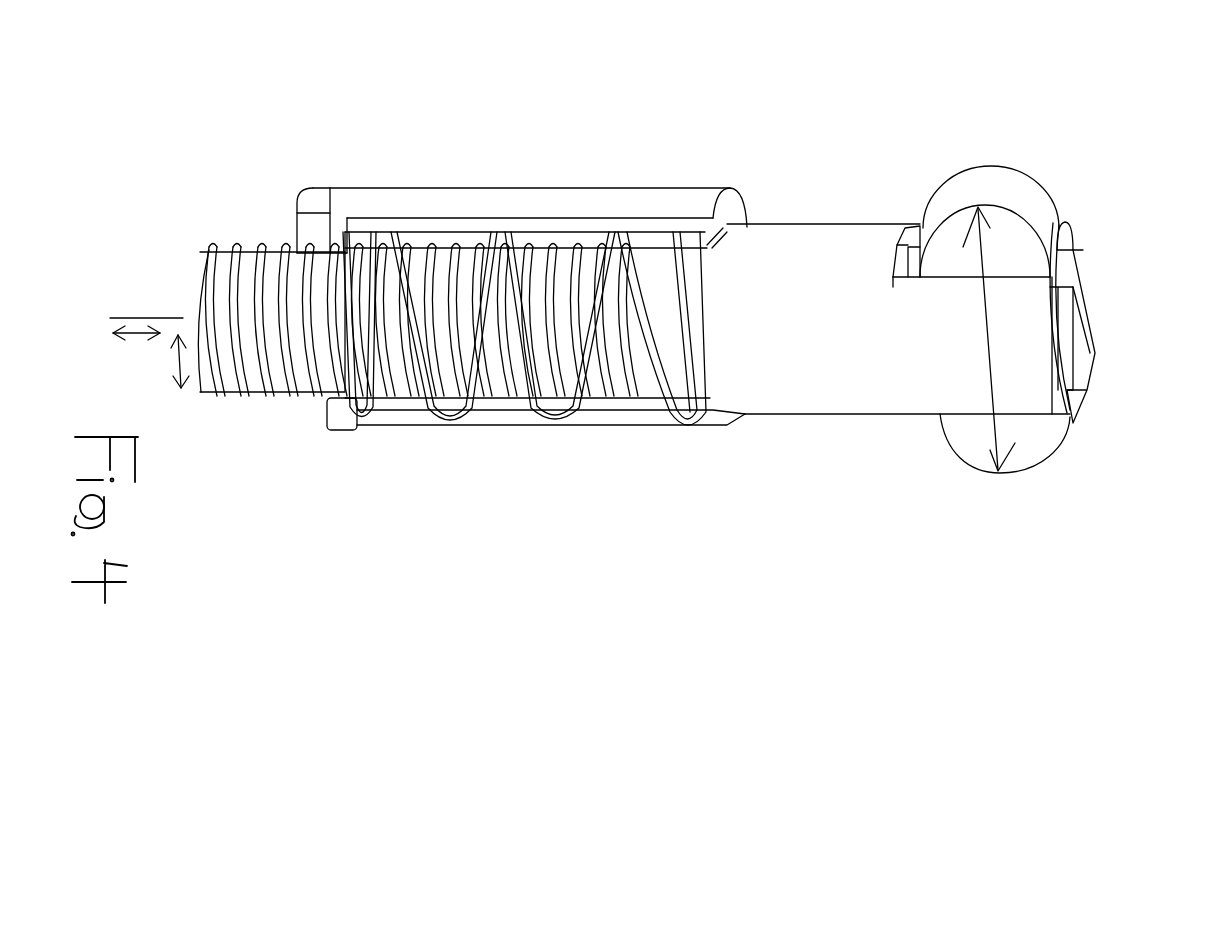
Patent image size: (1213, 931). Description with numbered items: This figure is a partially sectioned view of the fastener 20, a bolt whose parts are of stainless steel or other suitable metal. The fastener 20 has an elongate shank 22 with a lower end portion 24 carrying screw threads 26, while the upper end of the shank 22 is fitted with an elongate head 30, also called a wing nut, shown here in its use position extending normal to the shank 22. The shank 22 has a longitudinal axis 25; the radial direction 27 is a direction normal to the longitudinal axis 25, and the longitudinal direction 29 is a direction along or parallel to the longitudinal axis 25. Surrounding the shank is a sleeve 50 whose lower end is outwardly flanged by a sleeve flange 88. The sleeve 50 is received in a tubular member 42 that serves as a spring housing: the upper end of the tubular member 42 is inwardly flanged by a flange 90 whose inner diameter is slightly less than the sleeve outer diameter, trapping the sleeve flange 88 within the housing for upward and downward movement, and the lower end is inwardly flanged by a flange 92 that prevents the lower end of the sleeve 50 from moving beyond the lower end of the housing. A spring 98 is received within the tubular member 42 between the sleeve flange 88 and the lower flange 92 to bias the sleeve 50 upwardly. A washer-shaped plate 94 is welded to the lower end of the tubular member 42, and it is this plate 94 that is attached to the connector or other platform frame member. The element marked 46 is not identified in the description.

The fastener 20 is at (1115, 498).
The shank 22 is at (197, 287).
The lower end portion 24 is at (287, 397).
The longitudinal axis 25 is at (147, 318).
The screw threads 26 is at (497, 398).
The radial direction 27 is at (168, 367).
The longitudinal direction 29 is at (135, 333).
The head 30 is at (1020, 470).
The tubular member 42 is at (617, 197).
The retaining block 46 is at (340, 430).
The sleeve 50 is at (905, 415).
The sleeve flange 88 is at (555, 400).
The upper flange 90 is at (727, 242).
The lower spring housing flange 92 is at (297, 232).
The washer-shaped plate 94 is at (990, 250).
The spring 98 is at (700, 435).